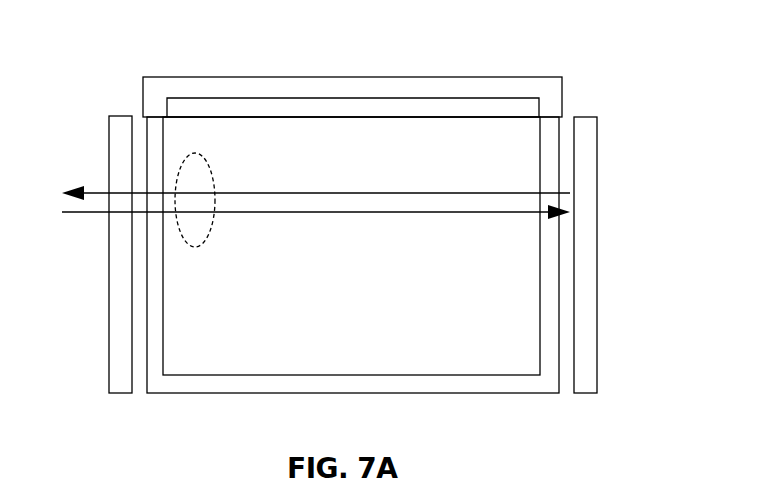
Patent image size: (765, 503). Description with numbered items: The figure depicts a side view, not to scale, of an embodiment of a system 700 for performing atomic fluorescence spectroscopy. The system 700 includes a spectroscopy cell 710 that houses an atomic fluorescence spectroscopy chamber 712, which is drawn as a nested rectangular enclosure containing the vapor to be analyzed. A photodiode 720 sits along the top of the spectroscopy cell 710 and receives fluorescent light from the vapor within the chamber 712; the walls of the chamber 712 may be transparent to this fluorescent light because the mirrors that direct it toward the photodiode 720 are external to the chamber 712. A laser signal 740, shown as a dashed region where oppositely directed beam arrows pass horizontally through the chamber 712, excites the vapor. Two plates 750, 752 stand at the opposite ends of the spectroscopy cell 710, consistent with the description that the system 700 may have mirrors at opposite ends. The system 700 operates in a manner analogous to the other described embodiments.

The system 700 is at (372, 38).
The spectroscopy cell 710 is at (502, 402).
The chamber 712 is at (373, 324).
The photodiode 720 is at (292, 98).
The laser signal 740 is at (190, 250).
The right window plate 750 is at (598, 212).
The left window plate 752 is at (109, 323).